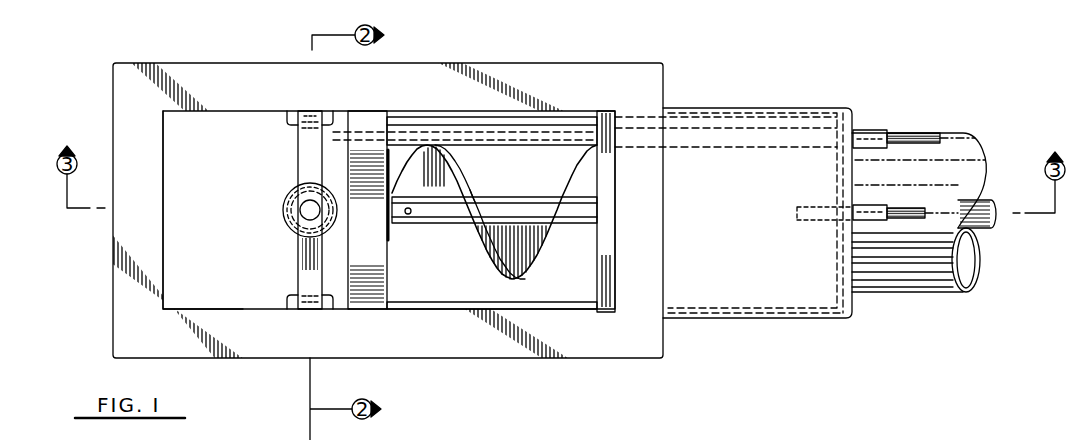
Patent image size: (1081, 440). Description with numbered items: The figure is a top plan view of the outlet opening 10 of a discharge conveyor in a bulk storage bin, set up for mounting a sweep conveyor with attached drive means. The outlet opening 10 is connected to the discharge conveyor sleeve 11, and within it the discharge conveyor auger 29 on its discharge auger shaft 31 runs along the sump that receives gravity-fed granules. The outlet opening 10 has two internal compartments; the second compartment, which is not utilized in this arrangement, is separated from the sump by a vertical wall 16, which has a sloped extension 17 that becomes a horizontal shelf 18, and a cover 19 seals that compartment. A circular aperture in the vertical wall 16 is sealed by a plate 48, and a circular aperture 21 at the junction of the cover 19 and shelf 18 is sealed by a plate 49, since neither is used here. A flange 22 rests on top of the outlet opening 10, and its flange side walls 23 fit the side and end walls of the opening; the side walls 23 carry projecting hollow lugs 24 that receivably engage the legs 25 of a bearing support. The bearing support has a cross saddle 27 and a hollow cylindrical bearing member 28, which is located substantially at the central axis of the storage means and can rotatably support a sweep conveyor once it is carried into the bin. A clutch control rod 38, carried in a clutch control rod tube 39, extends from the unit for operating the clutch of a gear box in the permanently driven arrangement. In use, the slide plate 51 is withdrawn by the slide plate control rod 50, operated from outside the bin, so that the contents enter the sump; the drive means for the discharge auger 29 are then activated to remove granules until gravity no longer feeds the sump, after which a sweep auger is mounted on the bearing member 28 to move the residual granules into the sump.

The outlet opening 10 is at (568, 58).
The discharge conveyor sleeve 11 is at (922, 296).
The vertical wall 16 is at (389, 280).
The sloped extension 17 is at (390, 234).
The horizontal shelf 18 is at (334, 244).
The cover 19 is at (183, 226).
The circular aperture 21 is at (290, 210).
The flange 22 is at (122, 317).
The flange side walls 23 is at (243, 308).
The hollow lugs 24 is at (290, 122).
The legs 25 is at (308, 113).
The cross saddle 27 is at (308, 150).
The bearing member 28 is at (310, 207).
The discharge conveyor auger 29 is at (500, 278).
The discharge auger shaft 31 is at (530, 206).
The clutch control rod 38 is at (920, 133).
The clutch control rod tube 39 is at (560, 146).
The plate 48 is at (412, 190).
The plate 49 is at (292, 222).
The slide plate control rod 50 is at (905, 206).
The slide plate 51 is at (606, 266).